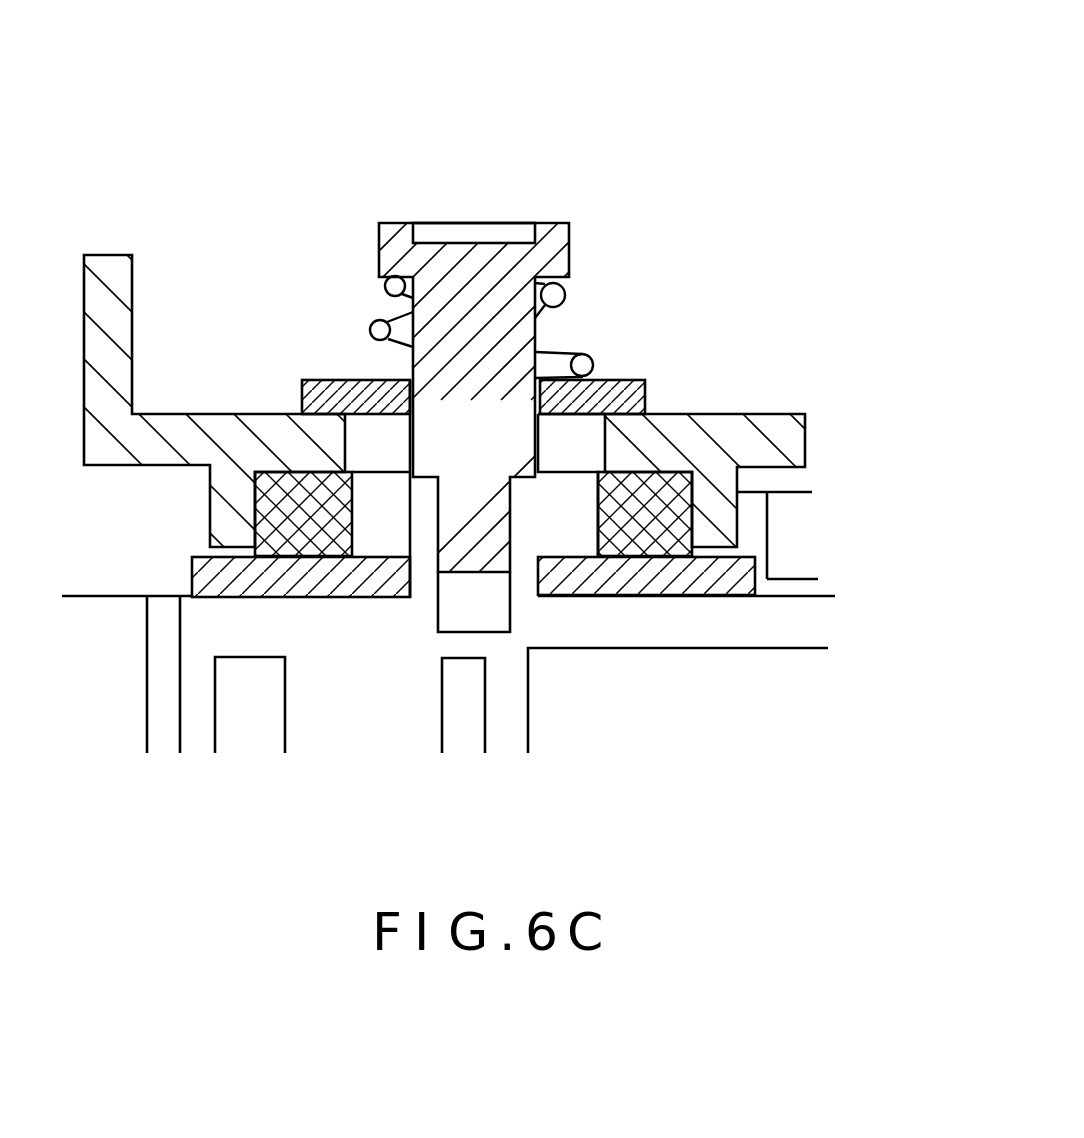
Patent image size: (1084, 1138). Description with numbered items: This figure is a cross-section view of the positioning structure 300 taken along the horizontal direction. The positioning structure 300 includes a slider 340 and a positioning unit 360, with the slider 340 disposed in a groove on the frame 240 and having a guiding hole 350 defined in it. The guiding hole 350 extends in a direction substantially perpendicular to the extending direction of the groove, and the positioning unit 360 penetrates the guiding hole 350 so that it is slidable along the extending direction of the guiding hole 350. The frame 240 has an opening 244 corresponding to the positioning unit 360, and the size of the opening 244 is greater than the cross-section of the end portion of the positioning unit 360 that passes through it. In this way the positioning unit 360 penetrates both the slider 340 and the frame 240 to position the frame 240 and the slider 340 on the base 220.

The positioning structure 300 is at (626, 126).
The positioning unit 360 is at (475, 270).
The opening 244 is at (377, 457).
The frame 240 is at (760, 443).
The slider 340 is at (653, 523).
The guiding hole 350 is at (567, 508).
The base 220 is at (818, 626).